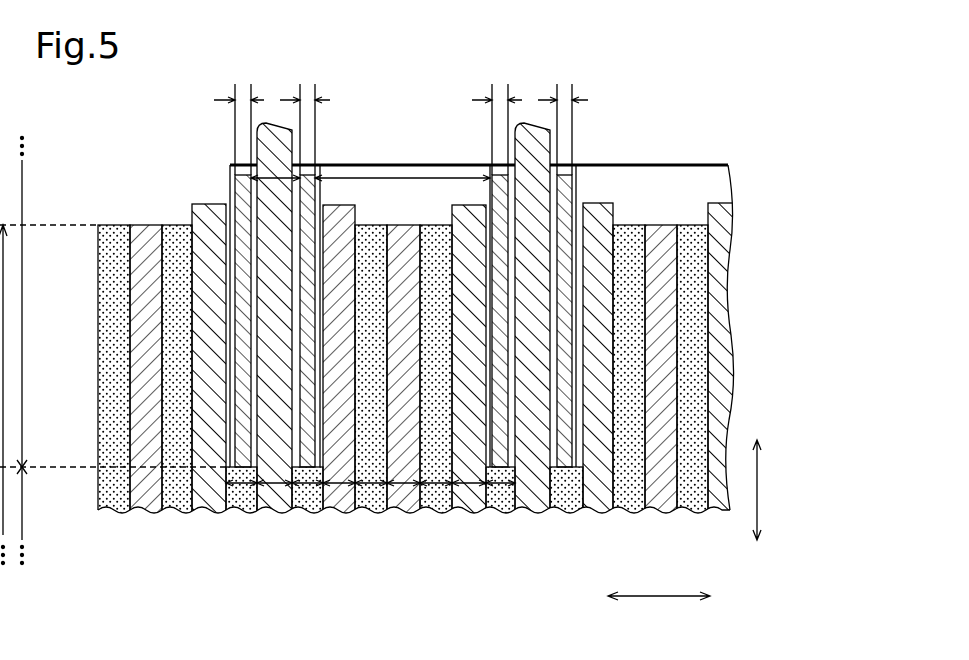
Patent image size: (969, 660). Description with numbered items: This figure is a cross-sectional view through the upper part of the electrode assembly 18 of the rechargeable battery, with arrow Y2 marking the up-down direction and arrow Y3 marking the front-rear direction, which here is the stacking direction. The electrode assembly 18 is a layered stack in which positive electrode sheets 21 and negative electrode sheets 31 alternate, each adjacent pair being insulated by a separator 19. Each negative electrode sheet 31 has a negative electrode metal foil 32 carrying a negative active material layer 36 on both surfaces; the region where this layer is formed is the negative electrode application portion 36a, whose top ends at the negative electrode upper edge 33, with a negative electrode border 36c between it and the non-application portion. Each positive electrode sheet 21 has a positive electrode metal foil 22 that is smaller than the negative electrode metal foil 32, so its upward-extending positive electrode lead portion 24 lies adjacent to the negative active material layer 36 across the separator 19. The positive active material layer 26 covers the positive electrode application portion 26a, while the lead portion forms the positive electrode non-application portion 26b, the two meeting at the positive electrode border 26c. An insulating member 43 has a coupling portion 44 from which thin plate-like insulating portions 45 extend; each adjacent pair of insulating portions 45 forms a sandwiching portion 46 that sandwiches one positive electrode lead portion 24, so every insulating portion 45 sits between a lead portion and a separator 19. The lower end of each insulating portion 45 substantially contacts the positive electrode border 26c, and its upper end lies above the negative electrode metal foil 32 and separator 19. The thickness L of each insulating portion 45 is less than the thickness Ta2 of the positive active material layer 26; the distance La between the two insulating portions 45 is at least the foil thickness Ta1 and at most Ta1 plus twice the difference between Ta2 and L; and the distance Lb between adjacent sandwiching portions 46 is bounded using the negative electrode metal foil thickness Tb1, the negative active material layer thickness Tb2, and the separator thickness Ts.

The electrode assembly 18 is at (750, 104).
The separator 19 is at (215, 201).
The positive electrode sheet 21 is at (256, 128).
The positive electrode metal foil 22 is at (300, 490).
The positive electrode lead portion 24 is at (262, 136).
The positive active material layer 26 is at (232, 495).
The positive electrode application portion 26a is at (22, 500).
The positive electrode non-application portion 26b is at (22, 358).
The positive electrode border 26c is at (300, 465).
The negative electrode sheet 31 is at (115, 512).
The negative electrode metal foil 32 is at (147, 225).
The negative electrode upper edge 33 is at (112, 225).
The negative active material layer 36 is at (411, 309).
The negative electrode application portion 36a is at (22, 314).
The negative electrode border 36c is at (391, 169).
The insulating member 43 is at (713, 164).
The coupling portion 44 is at (653, 166).
The insulating portion 45 is at (243, 175).
The sandwiching portion 46 is at (358, 96).
The thickness of insulating portion L is at (243, 94).
The distance between insulating portions La is at (270, 175).
The distance between adjacent sandwiching portions Lb is at (441, 176).
The thickness of separator Ts is at (347, 493).
The thickness of positive electrode metal foil Ta1 is at (268, 488).
The thickness of positive active material layer Ta2 is at (243, 490).
The thickness of negative electrode metal foil Tb1 is at (402, 493).
The thickness of negative active material layer Tb2 is at (371, 493).
The up-down direction Y2 is at (758, 490).
The front-rear direction Y3 is at (645, 597).